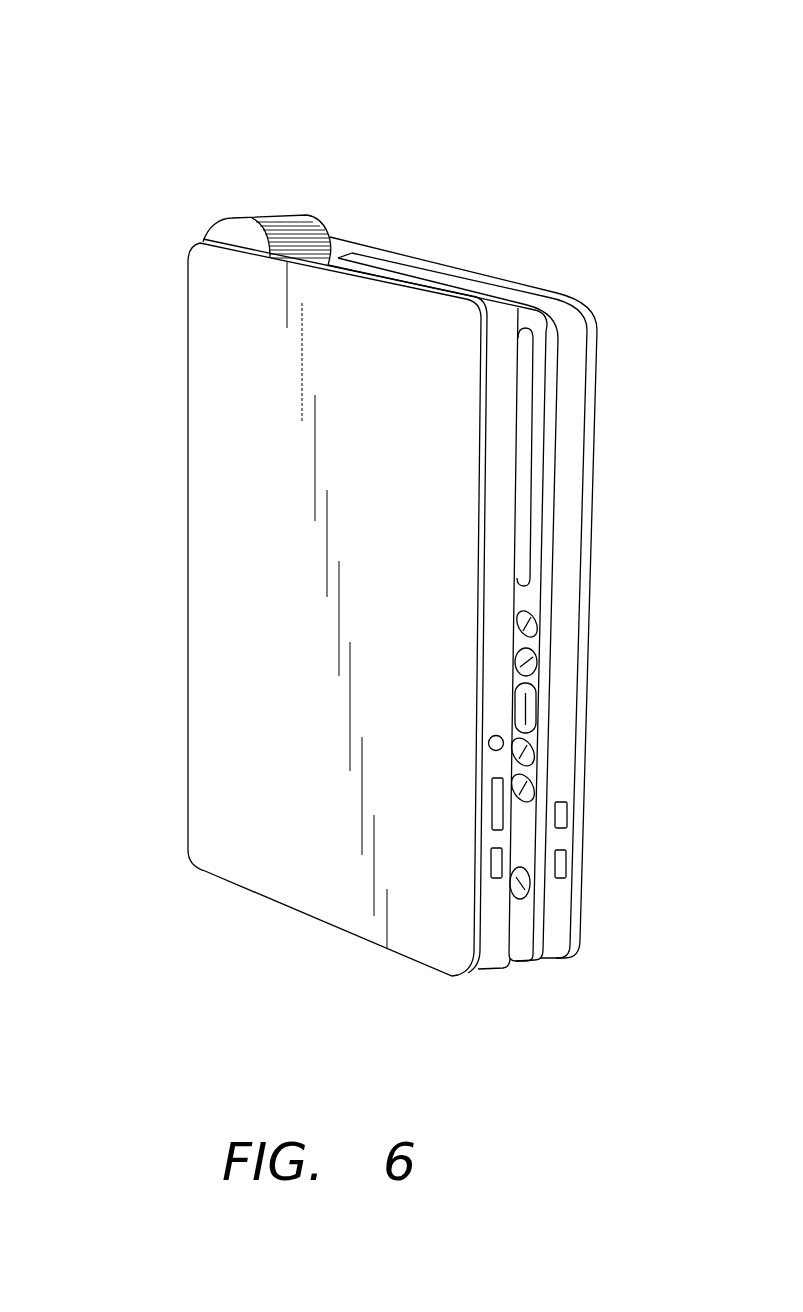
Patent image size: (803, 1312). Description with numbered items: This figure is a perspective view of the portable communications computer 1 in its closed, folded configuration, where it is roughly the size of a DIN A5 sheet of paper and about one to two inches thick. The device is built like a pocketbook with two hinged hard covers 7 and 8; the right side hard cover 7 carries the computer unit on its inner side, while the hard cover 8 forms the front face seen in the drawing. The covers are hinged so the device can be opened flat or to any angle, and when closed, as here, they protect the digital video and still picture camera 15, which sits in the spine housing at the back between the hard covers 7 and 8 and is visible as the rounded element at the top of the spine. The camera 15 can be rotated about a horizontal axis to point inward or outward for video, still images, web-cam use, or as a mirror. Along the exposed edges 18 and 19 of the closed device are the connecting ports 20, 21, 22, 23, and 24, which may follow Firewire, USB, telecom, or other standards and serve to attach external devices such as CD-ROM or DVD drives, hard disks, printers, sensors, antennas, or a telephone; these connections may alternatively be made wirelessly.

The portable communications computer 1 is at (112, 68).
The right side hard cover 7 is at (594, 483).
The hard cover 8 is at (272, 872).
The digital video and still picture camera 15 is at (279, 222).
The edge 18 is at (493, 940).
The edge 19 is at (558, 940).
The connecting port 20 is at (489, 741).
The connecting port 21 is at (493, 805).
The connecting port 22 is at (492, 858).
The connecting port 23 is at (562, 812).
The connecting port 24 is at (562, 866).